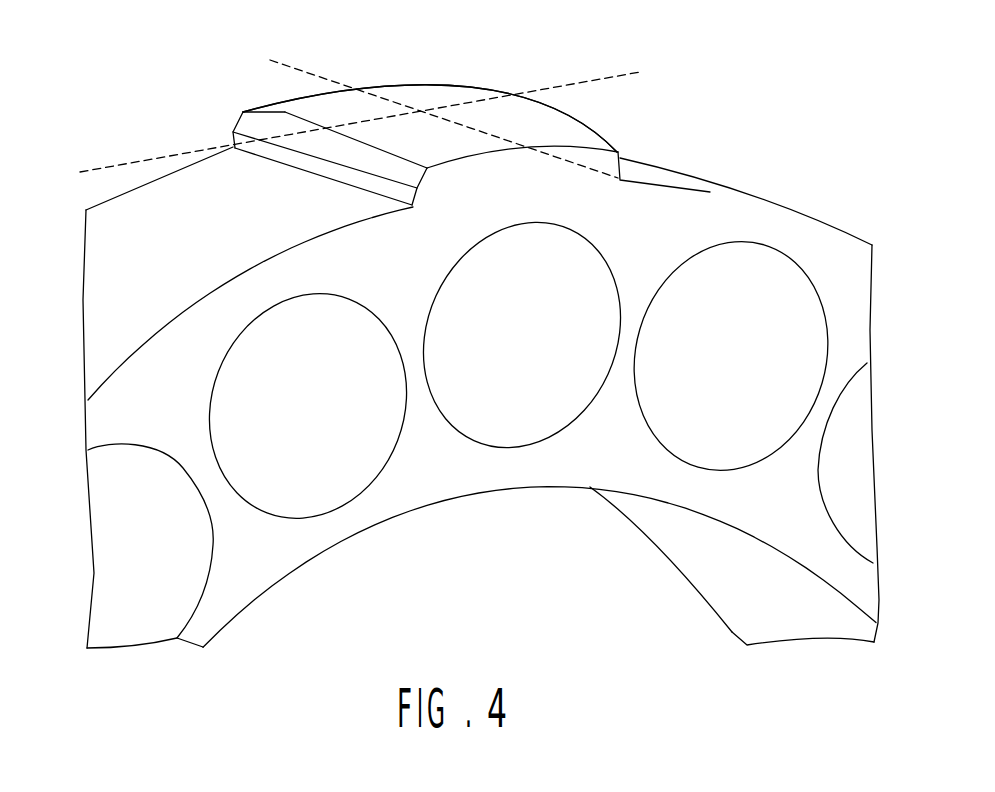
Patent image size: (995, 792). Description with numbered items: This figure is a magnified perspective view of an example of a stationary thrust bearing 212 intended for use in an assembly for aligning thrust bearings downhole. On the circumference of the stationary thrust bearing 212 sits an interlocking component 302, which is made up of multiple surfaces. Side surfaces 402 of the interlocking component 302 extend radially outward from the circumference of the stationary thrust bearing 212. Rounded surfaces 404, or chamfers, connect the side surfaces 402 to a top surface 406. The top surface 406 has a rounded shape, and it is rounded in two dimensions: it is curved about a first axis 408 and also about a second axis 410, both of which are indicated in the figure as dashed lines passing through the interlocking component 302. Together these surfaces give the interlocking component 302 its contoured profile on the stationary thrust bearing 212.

The stationary thrust bearing 212 is at (784, 208).
The interlocking component 302 is at (600, 133).
The side surfaces 402 is at (275, 146).
The rounded surfaces 404 is at (285, 111).
The top surface 406 is at (375, 92).
The axis 408 is at (313, 75).
The axis 410 is at (80, 172).